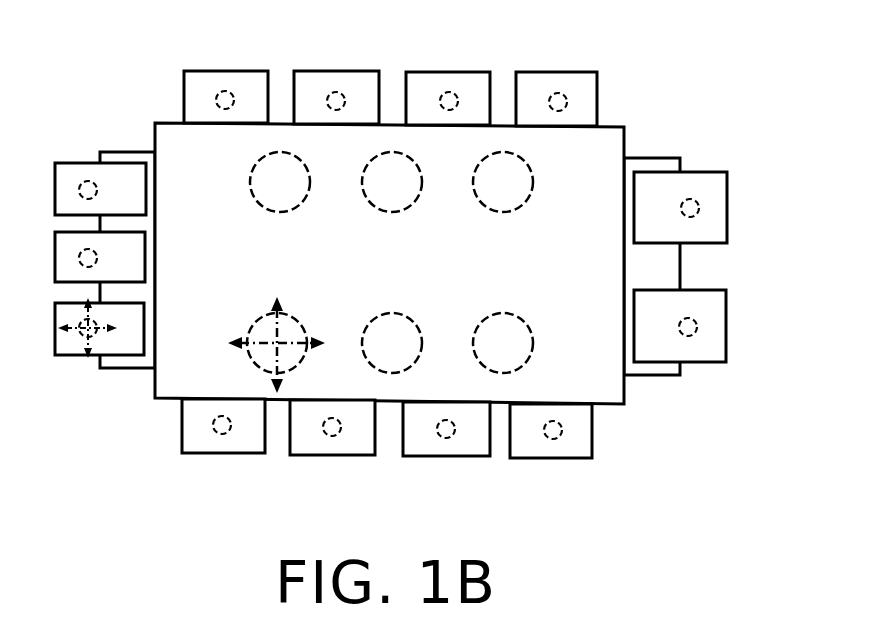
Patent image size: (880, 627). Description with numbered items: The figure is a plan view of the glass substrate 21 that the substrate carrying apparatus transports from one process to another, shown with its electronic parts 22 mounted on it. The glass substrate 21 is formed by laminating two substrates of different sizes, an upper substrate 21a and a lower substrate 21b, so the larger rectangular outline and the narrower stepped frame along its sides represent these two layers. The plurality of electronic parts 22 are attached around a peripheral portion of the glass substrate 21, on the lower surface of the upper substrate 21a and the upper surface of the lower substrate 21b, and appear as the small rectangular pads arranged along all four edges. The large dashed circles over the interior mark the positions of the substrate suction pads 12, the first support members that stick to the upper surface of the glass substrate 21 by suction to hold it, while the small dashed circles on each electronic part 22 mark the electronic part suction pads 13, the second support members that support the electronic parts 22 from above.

The substrate suction pad 12 is at (527, 162).
The electronic part suction pad 13 is at (566, 96).
The glass substrate 21 is at (423, 307).
The upper substrate 21a is at (608, 405).
The lower substrate 21b is at (653, 374).
The electronic part 22 is at (705, 348).